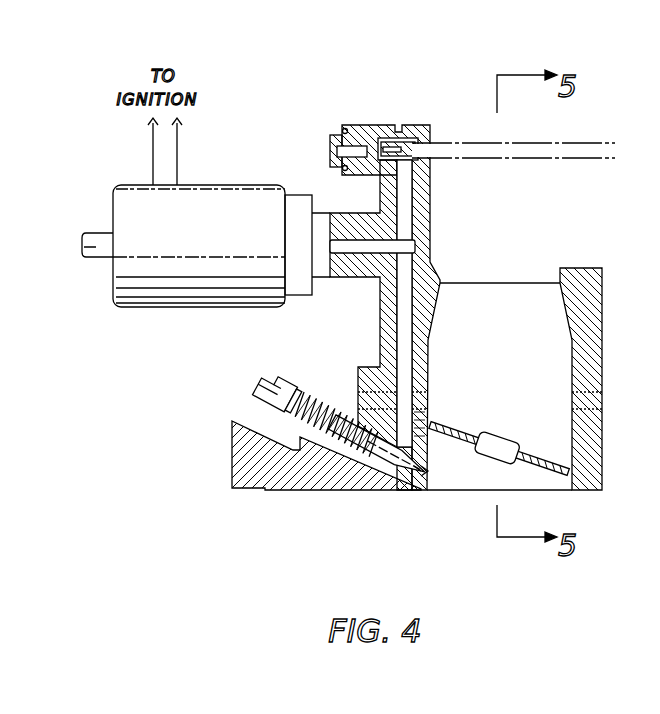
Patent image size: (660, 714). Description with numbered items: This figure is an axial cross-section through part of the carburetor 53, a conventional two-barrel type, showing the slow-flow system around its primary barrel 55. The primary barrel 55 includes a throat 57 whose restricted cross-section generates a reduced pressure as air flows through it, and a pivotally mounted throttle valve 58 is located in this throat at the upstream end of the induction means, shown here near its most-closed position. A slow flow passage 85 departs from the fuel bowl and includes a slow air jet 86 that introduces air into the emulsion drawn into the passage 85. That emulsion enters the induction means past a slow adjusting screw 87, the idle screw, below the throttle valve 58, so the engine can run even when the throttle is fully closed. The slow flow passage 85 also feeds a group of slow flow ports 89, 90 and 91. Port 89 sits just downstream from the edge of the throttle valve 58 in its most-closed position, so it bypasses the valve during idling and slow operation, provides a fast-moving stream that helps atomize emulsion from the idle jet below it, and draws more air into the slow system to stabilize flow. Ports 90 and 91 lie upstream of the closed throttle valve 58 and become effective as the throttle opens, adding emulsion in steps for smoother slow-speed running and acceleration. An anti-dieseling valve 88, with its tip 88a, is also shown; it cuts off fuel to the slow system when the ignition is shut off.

The carburetor 53 is at (602, 368).
The primary barrel 55 is at (511, 362).
The throat 57 is at (511, 280).
The throttle valve 58 is at (497, 462).
The slow flow passage 85 is at (566, 140).
The slow air jet 86 is at (398, 127).
The slow adjusting screw 87 is at (308, 387).
The anti-dieseling valve 88 is at (350, 246).
The pin tip 88a is at (427, 484).
The slow flow port 89 is at (430, 477).
The slow flow port 90 is at (432, 428).
The slow flow port 91 is at (431, 418).